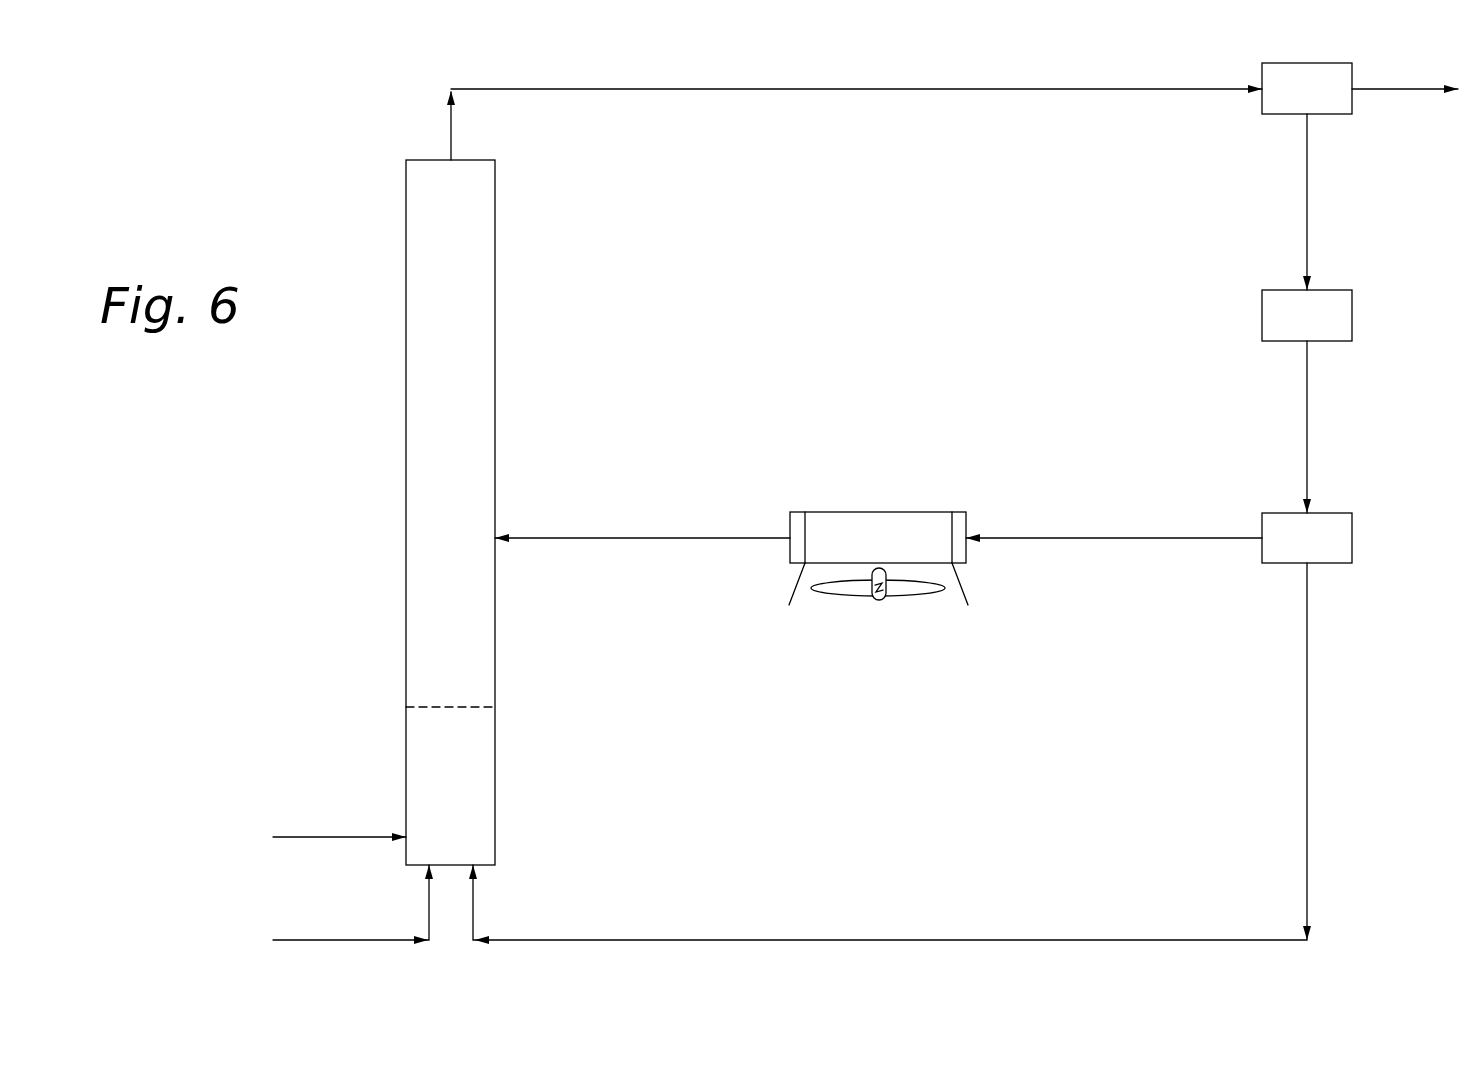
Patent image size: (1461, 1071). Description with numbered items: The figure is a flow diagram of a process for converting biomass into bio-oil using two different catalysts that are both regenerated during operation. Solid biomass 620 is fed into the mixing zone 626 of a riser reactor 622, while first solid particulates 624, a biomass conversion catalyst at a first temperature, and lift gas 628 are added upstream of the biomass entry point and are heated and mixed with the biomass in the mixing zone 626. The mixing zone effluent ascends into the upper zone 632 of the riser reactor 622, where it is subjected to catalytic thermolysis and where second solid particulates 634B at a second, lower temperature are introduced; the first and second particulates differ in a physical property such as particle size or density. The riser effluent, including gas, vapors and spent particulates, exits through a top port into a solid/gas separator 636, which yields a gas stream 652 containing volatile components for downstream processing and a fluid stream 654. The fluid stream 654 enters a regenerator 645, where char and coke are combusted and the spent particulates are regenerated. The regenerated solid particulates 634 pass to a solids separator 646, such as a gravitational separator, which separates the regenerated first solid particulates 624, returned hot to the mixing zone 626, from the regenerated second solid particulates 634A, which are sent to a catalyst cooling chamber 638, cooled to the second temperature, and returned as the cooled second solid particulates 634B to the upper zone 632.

The solid biomass 620 is at (312, 837).
The riser reactor 622 is at (471, 378).
The first solid particulates 624 is at (1310, 653).
The mixing zone 626 is at (480, 783).
The lift gas 628 is at (312, 940).
The upper zone 632 is at (420, 511).
The regenerated solid particulates 634 is at (1310, 412).
The regenerated second solid particulates 634A is at (1127, 537).
The second solid particulates 634B is at (600, 537).
The solid/gas separator 636 is at (1329, 102).
The catalyst cooling chamber 638 is at (898, 551).
The regenerator 645 is at (1329, 329).
The solids separator 646 is at (1329, 552).
The gas stream 652 is at (1409, 89).
The fluid stream 654 is at (1310, 192).